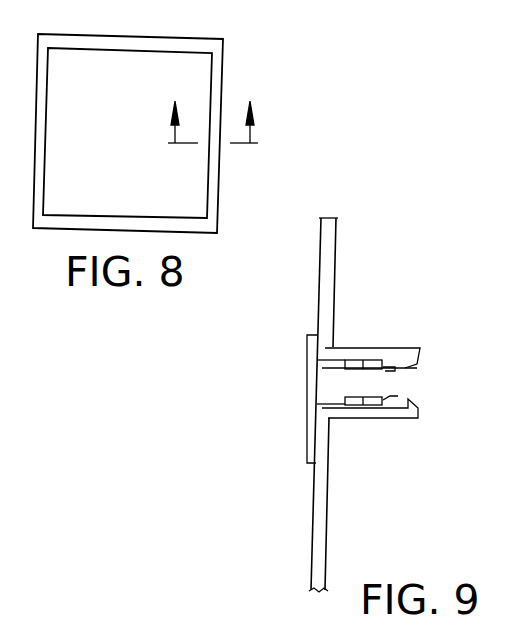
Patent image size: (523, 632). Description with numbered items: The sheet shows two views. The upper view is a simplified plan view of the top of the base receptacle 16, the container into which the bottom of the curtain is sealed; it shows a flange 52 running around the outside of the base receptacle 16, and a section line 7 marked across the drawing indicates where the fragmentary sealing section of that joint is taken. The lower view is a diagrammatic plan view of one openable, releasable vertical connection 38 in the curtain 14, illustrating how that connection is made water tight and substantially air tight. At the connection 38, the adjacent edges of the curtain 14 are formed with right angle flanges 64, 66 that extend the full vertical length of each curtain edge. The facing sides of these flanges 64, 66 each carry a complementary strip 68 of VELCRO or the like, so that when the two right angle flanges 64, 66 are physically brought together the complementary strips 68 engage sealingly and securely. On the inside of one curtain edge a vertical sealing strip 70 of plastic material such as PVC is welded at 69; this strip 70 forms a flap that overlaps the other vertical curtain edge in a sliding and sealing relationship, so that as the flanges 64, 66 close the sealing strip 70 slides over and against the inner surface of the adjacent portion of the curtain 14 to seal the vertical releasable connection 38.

In FIG. 8, the flange 52 is at (222, 62).
In FIG. 8, the base receptacle 16 is at (118, 135).
In FIG. 8, the section line 7— 7 is at (213, 107).
In FIG. 9, the curtain 14 is at (325, 255).
In FIG. 9, the vertical sealing strip 70 is at (317, 383).
In FIG. 9, the releasable vertical connection 38 is at (280, 359).
In FIG. 9, the right angle flange 64 is at (370, 348).
In FIG. 9, the right angle flange 66 is at (372, 420).
In FIG. 9, the complementary strip 68 is at (395, 369).
In FIG. 9, the weld 69 is at (317, 470).